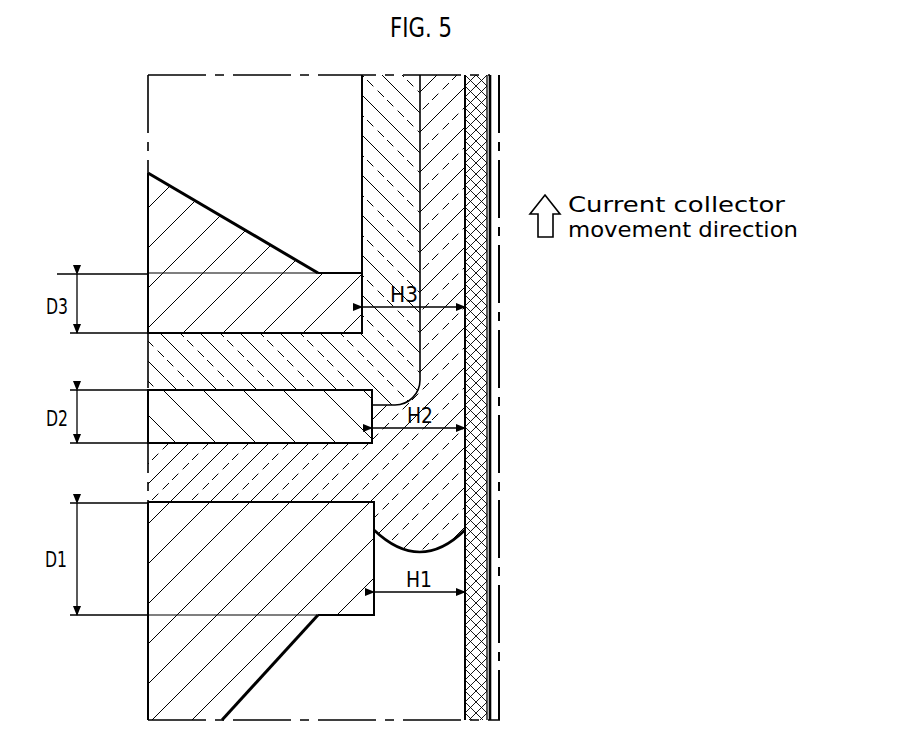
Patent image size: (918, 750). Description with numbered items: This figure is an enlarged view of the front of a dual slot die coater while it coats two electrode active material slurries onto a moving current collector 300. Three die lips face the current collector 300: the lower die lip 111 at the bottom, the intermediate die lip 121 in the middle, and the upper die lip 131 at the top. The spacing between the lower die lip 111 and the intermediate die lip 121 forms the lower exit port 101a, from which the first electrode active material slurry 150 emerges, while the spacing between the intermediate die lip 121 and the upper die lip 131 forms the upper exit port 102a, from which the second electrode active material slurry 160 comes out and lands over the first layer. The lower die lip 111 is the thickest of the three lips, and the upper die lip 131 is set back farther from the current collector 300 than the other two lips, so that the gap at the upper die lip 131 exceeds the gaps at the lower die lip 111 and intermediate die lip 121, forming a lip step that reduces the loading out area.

The lower die lip 111 is at (353, 577).
The intermediate die lip 121 is at (366, 418).
The upper die lip 131 is at (350, 300).
The lower exit port 101a is at (345, 468).
The upper exit port 102a is at (374, 362).
The first electrode active material slurry 150 is at (440, 189).
The second electrode active material slurry 160 is at (372, 136).
The current collector 300 is at (491, 128).